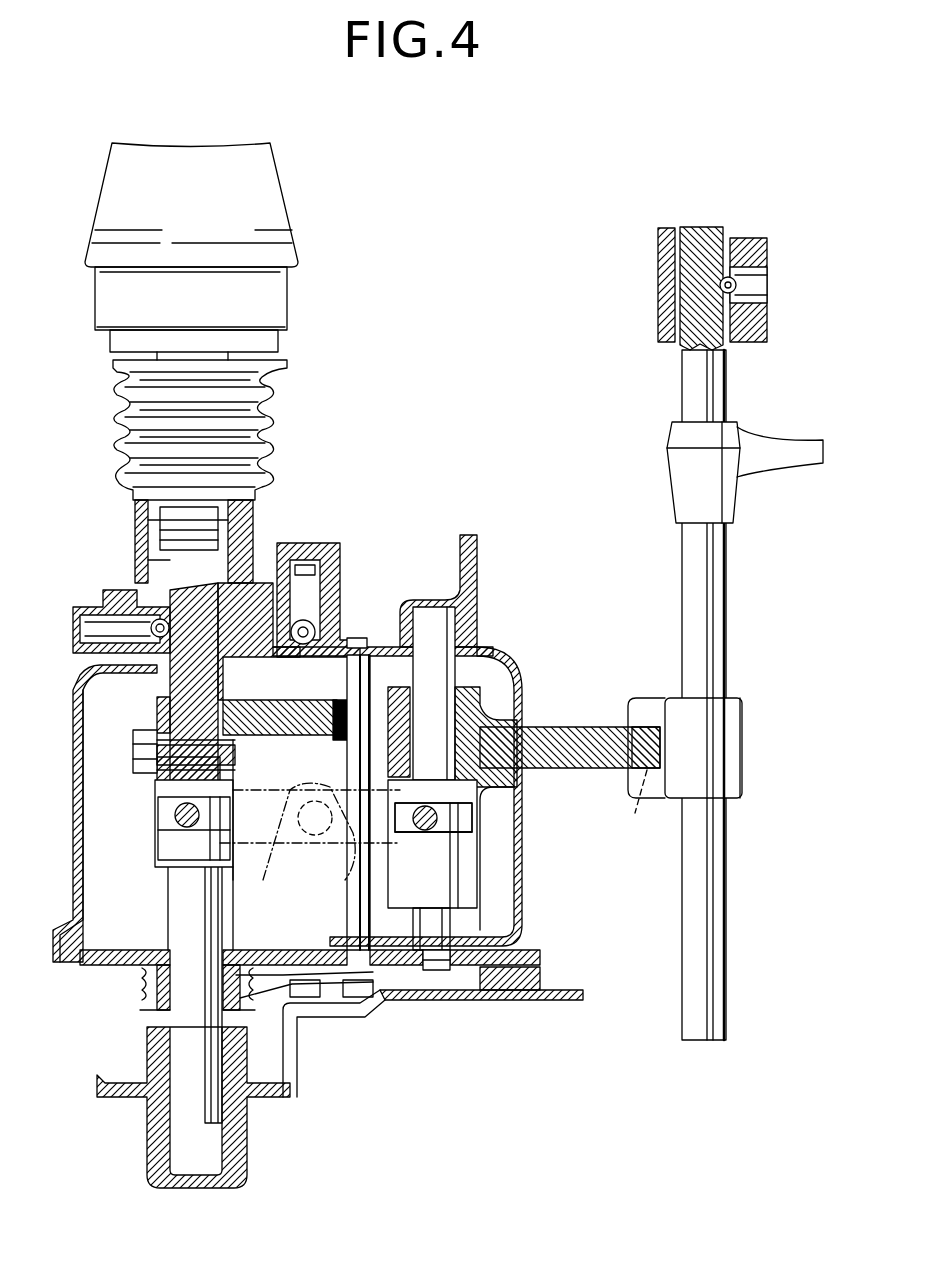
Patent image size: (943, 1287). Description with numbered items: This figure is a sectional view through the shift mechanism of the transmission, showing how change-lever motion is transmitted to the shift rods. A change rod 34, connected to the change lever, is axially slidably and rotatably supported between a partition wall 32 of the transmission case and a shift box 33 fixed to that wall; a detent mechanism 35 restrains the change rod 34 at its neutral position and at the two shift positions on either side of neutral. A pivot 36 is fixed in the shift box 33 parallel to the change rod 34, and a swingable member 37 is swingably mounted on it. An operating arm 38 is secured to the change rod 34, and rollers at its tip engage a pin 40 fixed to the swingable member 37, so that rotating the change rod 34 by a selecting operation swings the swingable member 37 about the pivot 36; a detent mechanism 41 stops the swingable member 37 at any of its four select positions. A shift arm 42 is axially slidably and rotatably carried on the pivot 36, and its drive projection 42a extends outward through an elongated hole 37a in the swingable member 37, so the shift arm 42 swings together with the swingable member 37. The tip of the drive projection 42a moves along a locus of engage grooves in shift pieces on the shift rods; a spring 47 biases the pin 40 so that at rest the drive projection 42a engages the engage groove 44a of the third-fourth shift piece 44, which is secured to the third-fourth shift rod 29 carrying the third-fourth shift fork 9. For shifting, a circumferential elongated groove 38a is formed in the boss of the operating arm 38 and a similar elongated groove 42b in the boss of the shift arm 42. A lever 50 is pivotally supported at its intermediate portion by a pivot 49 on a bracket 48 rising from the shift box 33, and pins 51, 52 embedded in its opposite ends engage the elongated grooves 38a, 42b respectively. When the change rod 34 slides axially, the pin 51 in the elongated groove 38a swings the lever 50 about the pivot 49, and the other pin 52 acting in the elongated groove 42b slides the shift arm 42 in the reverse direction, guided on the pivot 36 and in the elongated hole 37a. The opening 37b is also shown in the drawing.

The third-fourth shift fork 9 is at (789, 447).
The third-fourth shift rod 29 is at (714, 622).
The partition wall 32 is at (291, 1088).
The shift box 33 is at (74, 752).
The change rod 34 is at (175, 937).
The detent mechanism 35 is at (140, 622).
The pivot 36 is at (443, 675).
The swingable member 37 is at (535, 889).
The elongated hole 37a is at (518, 820).
The opening of case 37b is at (640, 812).
The operating arm 38 is at (283, 704).
The elongated groove 38a is at (157, 808).
The pin 40 is at (350, 880).
The detent mechanism 41 is at (307, 600).
The shift arm 42 is at (483, 852).
The drive projection 42a is at (576, 730).
The elongated groove 42b is at (457, 832).
The third-fourth shift piece 44 is at (729, 717).
The engage groove 44a is at (641, 730).
The spring 47 is at (338, 1013).
The bracket 48 is at (217, 895).
The pivot 49 is at (320, 810).
The lever 50 is at (258, 800).
The pin 51 is at (157, 813).
The pin 52 is at (425, 831).